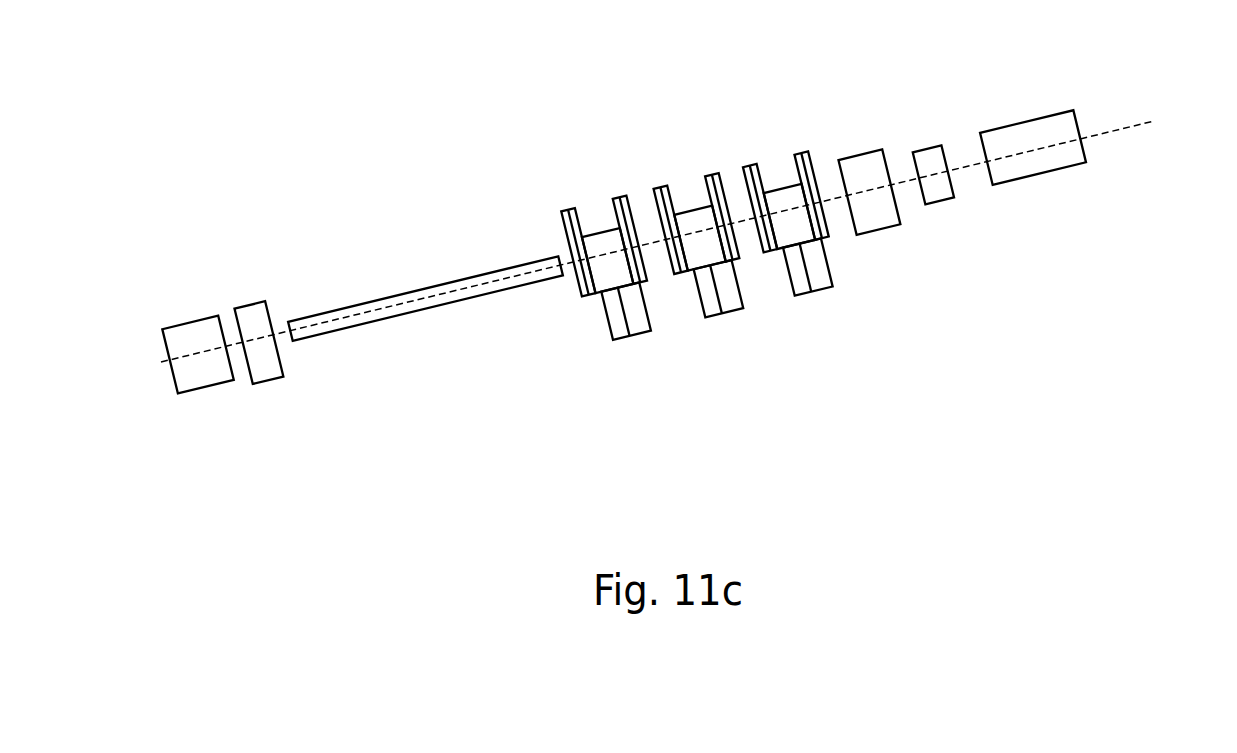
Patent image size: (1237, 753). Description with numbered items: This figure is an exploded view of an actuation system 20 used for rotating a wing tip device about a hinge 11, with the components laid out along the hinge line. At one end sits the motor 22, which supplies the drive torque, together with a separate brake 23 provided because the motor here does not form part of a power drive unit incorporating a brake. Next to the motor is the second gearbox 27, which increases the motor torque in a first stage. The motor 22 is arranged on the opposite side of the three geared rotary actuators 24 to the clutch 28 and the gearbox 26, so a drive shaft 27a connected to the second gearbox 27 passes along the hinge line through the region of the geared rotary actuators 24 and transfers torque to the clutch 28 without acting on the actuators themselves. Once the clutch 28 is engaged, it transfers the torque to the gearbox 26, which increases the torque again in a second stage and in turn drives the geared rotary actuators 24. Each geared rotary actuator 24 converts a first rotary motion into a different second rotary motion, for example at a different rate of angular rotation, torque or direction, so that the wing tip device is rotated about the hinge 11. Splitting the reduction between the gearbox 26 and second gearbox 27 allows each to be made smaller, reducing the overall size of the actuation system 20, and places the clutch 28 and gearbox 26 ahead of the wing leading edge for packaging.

The hinge 11 is at (1131, 153).
The actuation system 20 is at (332, 132).
The motor 22 is at (1048, 143).
The brake 23 is at (925, 173).
The geared rotary actuator 24 is at (617, 268).
The gearbox 26 is at (260, 357).
The second gearbox 27 is at (879, 210).
The drive shaft 27a is at (448, 298).
The clutch 28 is at (198, 372).